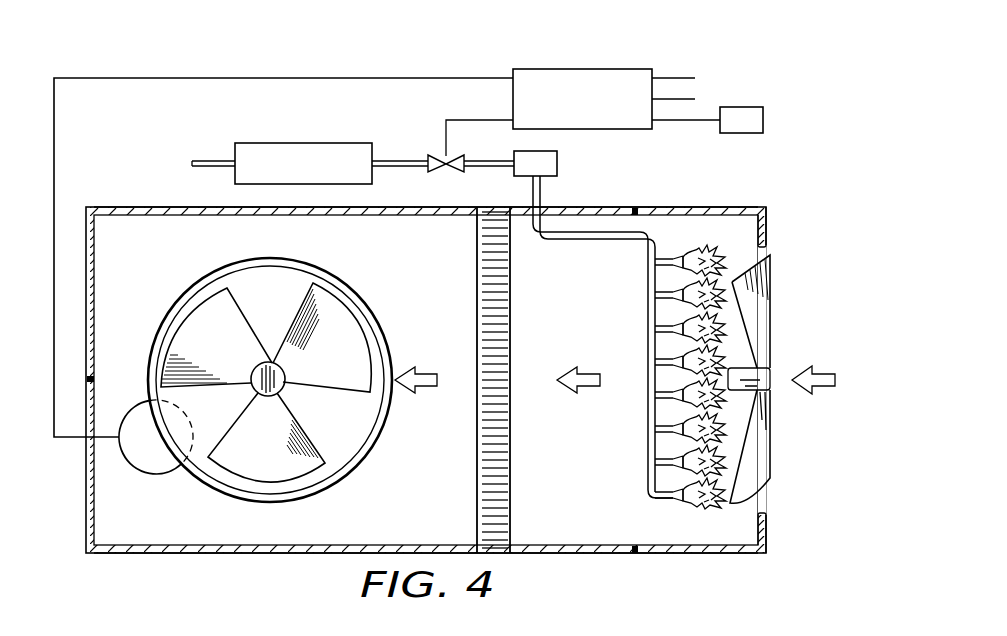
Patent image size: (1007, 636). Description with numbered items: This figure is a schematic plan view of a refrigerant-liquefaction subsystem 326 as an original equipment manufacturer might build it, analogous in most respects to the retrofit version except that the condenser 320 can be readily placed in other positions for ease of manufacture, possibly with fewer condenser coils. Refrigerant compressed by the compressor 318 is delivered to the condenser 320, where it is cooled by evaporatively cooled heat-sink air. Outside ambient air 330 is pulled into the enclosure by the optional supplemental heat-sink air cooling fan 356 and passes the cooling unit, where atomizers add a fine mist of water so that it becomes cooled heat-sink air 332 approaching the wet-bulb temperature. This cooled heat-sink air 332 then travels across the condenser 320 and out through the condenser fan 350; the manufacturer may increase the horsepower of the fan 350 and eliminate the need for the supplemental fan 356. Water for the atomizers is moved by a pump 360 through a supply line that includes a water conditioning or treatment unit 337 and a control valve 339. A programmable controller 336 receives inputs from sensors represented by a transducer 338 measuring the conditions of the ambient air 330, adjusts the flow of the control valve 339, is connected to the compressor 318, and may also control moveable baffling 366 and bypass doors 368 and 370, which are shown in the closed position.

The compressor 318 is at (157, 474).
The condenser 320 is at (511, 460).
The refrigerant-liquefaction subsystem 326 is at (740, 198).
The ambient air 330 is at (830, 368).
The cooled heat-sink air 332 is at (428, 368).
The programmable controller 336 is at (584, 69).
The water conditioning or treatment unit 337 is at (305, 143).
The transducer 338 is at (743, 107).
The control valve 339 is at (440, 156).
The condenser fan 350 is at (232, 303).
The heat-sink air cooling fan 356 is at (768, 490).
The pump 360 is at (557, 162).
The baffling 366 is at (167, 78).
The bypass door 368 is at (658, 553).
The bypass door 370 is at (660, 207).